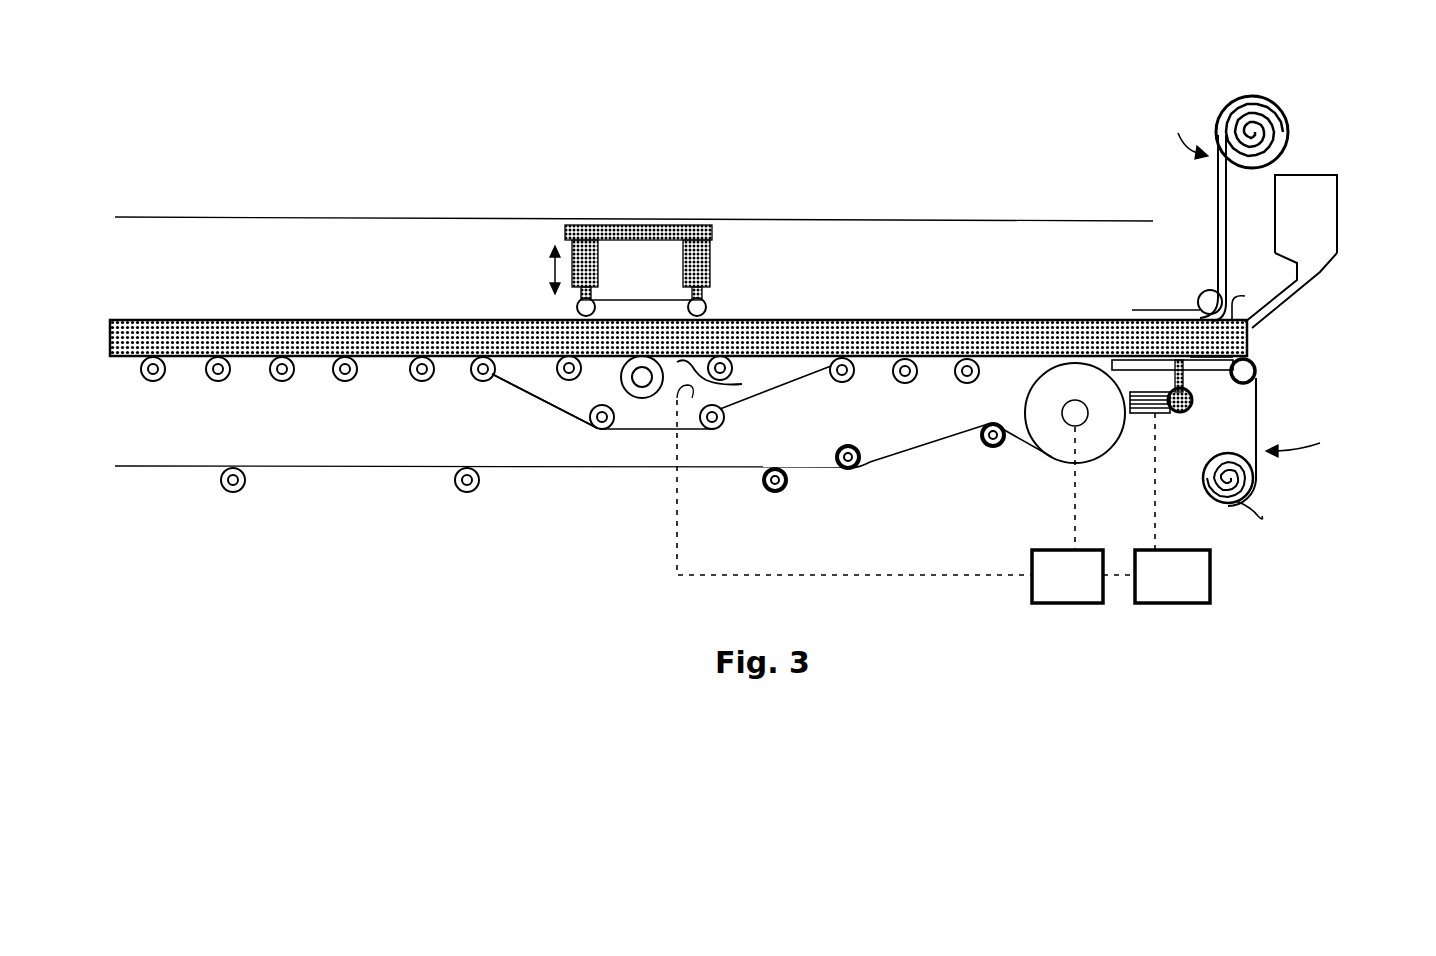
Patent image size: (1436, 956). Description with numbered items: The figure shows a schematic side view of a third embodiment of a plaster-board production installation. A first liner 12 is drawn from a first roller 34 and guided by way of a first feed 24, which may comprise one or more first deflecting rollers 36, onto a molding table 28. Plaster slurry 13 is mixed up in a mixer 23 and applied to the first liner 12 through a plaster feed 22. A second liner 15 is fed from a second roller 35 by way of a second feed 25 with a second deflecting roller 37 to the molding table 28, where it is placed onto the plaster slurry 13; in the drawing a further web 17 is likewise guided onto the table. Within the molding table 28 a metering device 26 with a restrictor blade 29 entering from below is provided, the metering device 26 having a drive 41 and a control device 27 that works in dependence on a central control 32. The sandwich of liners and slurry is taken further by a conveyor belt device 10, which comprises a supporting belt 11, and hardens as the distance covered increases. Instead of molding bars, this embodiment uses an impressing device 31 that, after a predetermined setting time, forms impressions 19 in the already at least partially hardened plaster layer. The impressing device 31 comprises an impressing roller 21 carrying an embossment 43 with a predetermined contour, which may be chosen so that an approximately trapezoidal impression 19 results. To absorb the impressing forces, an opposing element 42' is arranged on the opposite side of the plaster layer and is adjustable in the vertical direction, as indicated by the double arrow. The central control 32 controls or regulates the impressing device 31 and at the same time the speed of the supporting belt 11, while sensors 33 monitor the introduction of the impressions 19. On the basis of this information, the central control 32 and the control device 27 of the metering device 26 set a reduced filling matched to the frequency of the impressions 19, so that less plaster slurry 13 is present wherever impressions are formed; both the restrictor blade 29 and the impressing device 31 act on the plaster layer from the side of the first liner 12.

The conveyor belt device 10 is at (368, 434).
The supporting belt 11 is at (935, 366).
The first liner 12 is at (1265, 397).
The plaster slurry 13 is at (1255, 291).
The second liner 15 is at (1214, 201).
The web 17 is at (1130, 312).
The impressions 19 is at (318, 358).
The impressing roller 21 is at (622, 398).
The plaster feed 22 is at (1290, 297).
The mixer 23 is at (1322, 190).
The first feed 24 is at (1317, 447).
The second feed 25 is at (1181, 127).
The metering device 26 is at (1180, 420).
The control device 27 is at (1176, 585).
The molding table 28 is at (1212, 367).
The restrictor blade 29 is at (1168, 378).
The impressing device 31 is at (600, 378).
The central control 32 is at (1068, 590).
The sensors 33 is at (643, 393).
The first roller 34 is at (1249, 507).
The second roller 35 is at (1280, 126).
The first deflecting roller 36 is at (1255, 360).
The second deflecting roller 37 is at (1205, 292).
The drive 41 is at (1138, 415).
The opposing element 42' is at (663, 270).
The embossment 43 is at (731, 374).